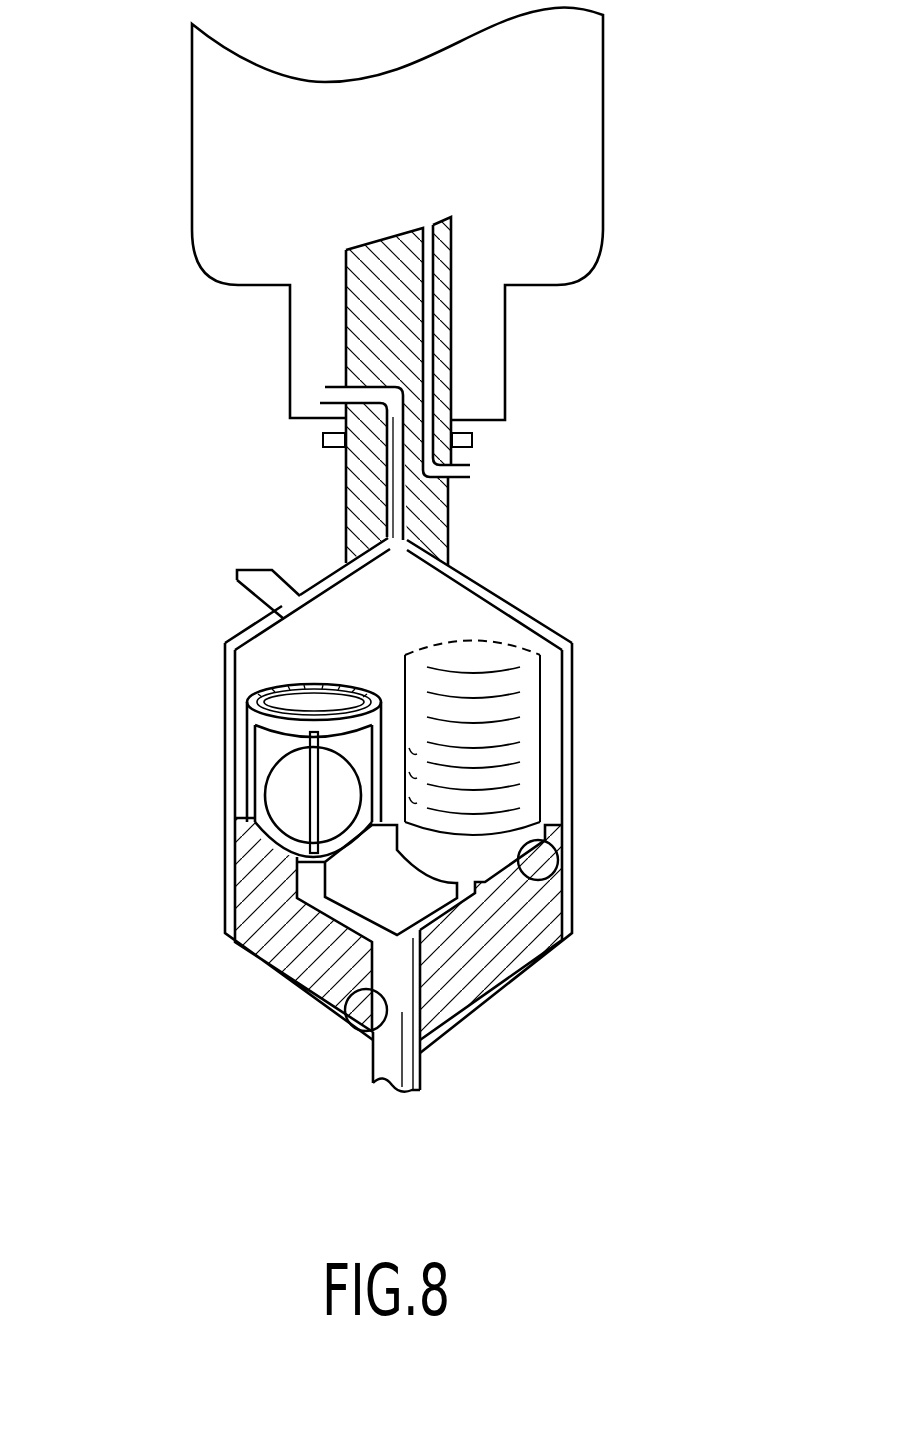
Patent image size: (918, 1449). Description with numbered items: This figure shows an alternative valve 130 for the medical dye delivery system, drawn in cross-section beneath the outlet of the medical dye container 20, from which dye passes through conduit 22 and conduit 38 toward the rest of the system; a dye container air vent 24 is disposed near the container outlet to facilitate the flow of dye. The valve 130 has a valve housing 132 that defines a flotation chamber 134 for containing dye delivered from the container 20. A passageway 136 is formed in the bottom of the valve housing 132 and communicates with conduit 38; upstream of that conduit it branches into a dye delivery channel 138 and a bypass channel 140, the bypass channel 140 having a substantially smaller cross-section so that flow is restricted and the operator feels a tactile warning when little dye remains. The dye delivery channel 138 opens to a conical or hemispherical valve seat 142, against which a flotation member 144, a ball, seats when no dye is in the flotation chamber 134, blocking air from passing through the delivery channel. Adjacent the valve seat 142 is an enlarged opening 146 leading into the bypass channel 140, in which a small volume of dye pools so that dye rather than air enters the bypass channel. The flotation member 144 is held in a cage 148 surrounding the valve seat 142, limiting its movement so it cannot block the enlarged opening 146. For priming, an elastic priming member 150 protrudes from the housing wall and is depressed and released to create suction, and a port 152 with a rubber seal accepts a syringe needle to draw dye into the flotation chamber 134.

The medical dye container 20 is at (602, 148).
The conduit 22 is at (340, 510).
The dye container air vent 24 is at (477, 472).
The conduit 38 is at (423, 1052).
The valve 130 is at (696, 642).
The valve housing 132 is at (225, 694).
The flotation chamber 134 is at (348, 592).
The passageway 136 is at (346, 1012).
The dye delivery channel 138 is at (318, 908).
The bypass channel 140 is at (450, 908).
The valve seat 142 is at (268, 860).
The flotation member 144 is at (263, 786).
The enlarged opening 146 is at (556, 873).
The cage 148 is at (332, 686).
The elastic priming member 150 is at (540, 694).
The port 152 is at (235, 572).